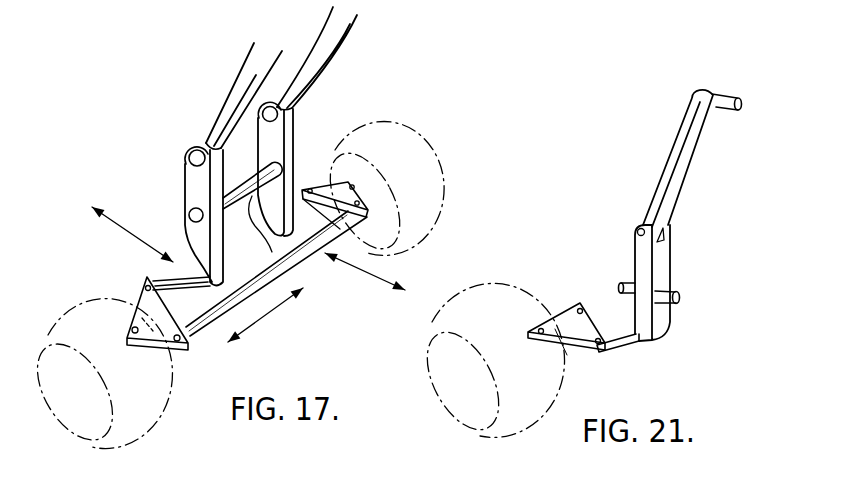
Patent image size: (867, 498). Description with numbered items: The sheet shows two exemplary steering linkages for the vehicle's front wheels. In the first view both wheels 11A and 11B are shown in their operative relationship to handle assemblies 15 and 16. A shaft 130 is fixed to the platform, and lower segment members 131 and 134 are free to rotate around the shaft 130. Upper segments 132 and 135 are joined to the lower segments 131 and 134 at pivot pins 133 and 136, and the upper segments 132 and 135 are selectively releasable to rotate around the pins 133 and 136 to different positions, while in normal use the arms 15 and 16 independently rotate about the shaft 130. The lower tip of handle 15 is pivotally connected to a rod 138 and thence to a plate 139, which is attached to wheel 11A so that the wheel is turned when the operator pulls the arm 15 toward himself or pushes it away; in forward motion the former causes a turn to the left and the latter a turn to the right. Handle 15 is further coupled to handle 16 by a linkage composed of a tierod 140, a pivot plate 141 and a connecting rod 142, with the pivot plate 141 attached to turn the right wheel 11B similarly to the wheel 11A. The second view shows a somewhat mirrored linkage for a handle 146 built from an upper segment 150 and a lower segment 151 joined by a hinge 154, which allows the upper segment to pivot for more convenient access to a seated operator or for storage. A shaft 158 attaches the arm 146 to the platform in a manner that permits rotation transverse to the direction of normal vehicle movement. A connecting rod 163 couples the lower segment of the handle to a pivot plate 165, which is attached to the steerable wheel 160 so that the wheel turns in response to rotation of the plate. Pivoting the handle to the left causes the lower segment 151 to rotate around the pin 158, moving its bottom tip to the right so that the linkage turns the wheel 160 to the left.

In FIG. 17, the handle assembly 15 is at (200, 97).
In FIG. 17, the handle assembly 16 is at (376, 23).
In FIG. 17, the shaft 130 is at (252, 215).
In FIG. 17, the lower segment member 131 is at (192, 196).
In FIG. 17, the upper segment 132 is at (213, 118).
In FIG. 17, the pivot pin 133 is at (189, 163).
In FIG. 17, the lower segment member 134 is at (295, 126).
In FIG. 17, the upper segment 135 is at (347, 32).
In FIG. 17, the pivot pin 136 is at (292, 105).
In FIG. 17, the rod 138 is at (157, 280).
In FIG. 17, the plate 139 is at (143, 300).
In FIG. 17, the tierod 140 is at (213, 326).
In FIG. 17, the pivot plate 141 is at (345, 181).
In FIG. 17, the connecting rod 142 is at (340, 232).
In FIG. 17, the wheel 11A is at (135, 432).
In FIG. 17, the wheel 11B is at (440, 150).
In FIG. 21, the handle 146 is at (659, 160).
In FIG. 21, the upper segment 150 is at (688, 104).
In FIG. 21, the lower segment 151 is at (665, 265).
In FIG. 21, the hinge 154 is at (638, 230).
In FIG. 21, the shaft 158 is at (680, 291).
In FIG. 21, the steerable wheel 160 is at (522, 437).
In FIG. 21, the connecting rod 163 is at (628, 345).
In FIG. 21, the pivot plate 165 is at (573, 264).